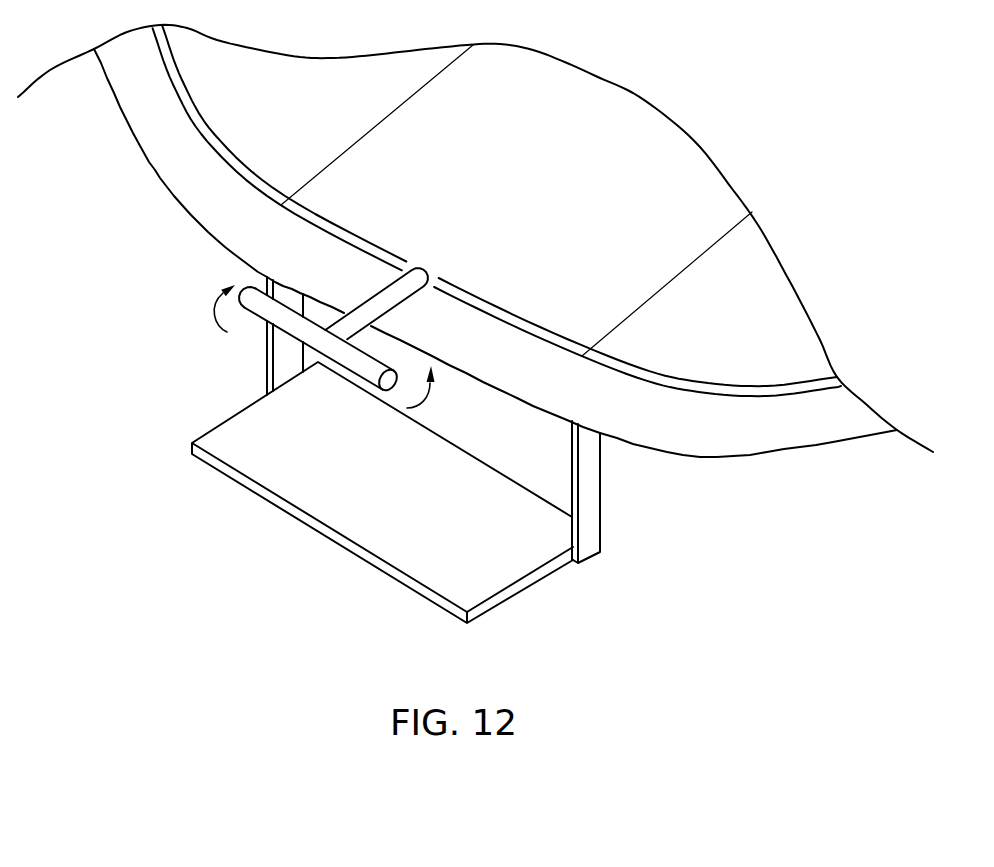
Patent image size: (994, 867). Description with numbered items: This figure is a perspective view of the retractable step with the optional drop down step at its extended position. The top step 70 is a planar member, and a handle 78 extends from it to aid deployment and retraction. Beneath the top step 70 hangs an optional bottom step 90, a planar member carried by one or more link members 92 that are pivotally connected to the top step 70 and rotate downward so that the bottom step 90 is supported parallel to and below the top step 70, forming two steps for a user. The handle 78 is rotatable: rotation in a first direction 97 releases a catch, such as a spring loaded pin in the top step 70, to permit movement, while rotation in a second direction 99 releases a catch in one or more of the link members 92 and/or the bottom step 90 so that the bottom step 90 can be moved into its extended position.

The top step 70 is at (652, 277).
The handle 78 is at (313, 342).
The bottom step 90 is at (532, 587).
The link members 92 is at (588, 485).
The first direction 97 is at (428, 398).
The second direction 99 is at (213, 309).